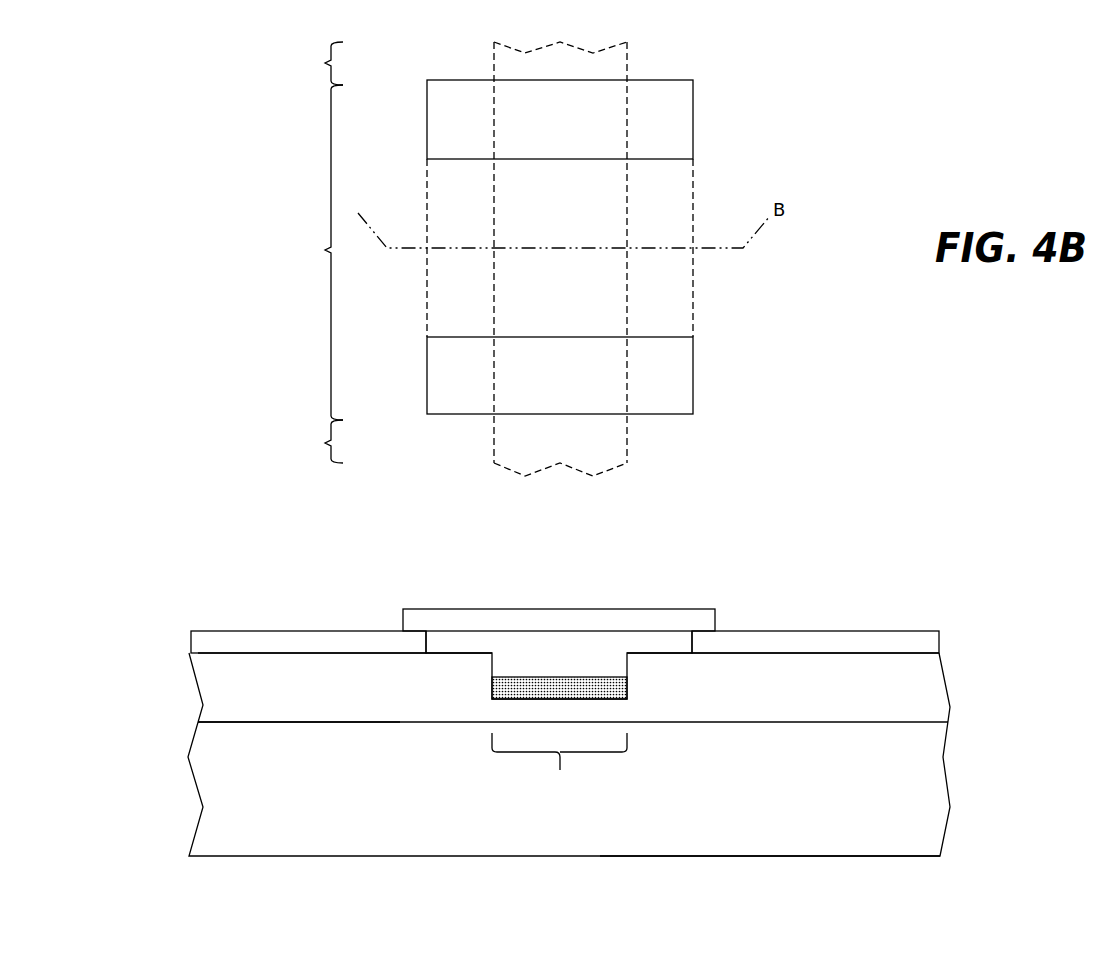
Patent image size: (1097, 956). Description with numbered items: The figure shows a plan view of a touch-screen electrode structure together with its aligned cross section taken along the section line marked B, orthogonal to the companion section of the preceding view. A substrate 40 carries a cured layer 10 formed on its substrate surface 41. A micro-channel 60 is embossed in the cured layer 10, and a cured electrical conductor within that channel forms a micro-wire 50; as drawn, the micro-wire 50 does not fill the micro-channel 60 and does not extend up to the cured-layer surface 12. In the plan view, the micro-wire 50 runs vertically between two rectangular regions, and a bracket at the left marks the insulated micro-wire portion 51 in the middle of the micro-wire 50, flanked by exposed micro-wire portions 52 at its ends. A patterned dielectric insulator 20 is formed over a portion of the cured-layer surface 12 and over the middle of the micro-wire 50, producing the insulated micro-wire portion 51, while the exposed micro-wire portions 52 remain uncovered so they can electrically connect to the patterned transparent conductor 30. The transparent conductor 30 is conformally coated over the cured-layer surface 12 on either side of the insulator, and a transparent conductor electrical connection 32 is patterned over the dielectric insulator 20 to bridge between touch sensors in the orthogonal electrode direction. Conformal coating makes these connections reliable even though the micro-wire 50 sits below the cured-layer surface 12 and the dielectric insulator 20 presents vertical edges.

The cured layer 10 is at (950, 707).
The cured-layer surface 12 is at (303, 653).
The patterned dielectric insulator 20 is at (660, 80).
The patterned transparent conductor 30 is at (233, 631).
The transparent conductor electrical connection 32 is at (580, 337).
The substrate 40 is at (950, 807).
The substrate surface 41 is at (252, 722).
The micro-wire 50 is at (496, 699).
The insulated micro-wire portion 51 is at (325, 250).
The exposed micro-wire portion 52 is at (325, 63).
The micro-channel 60 is at (627, 275).